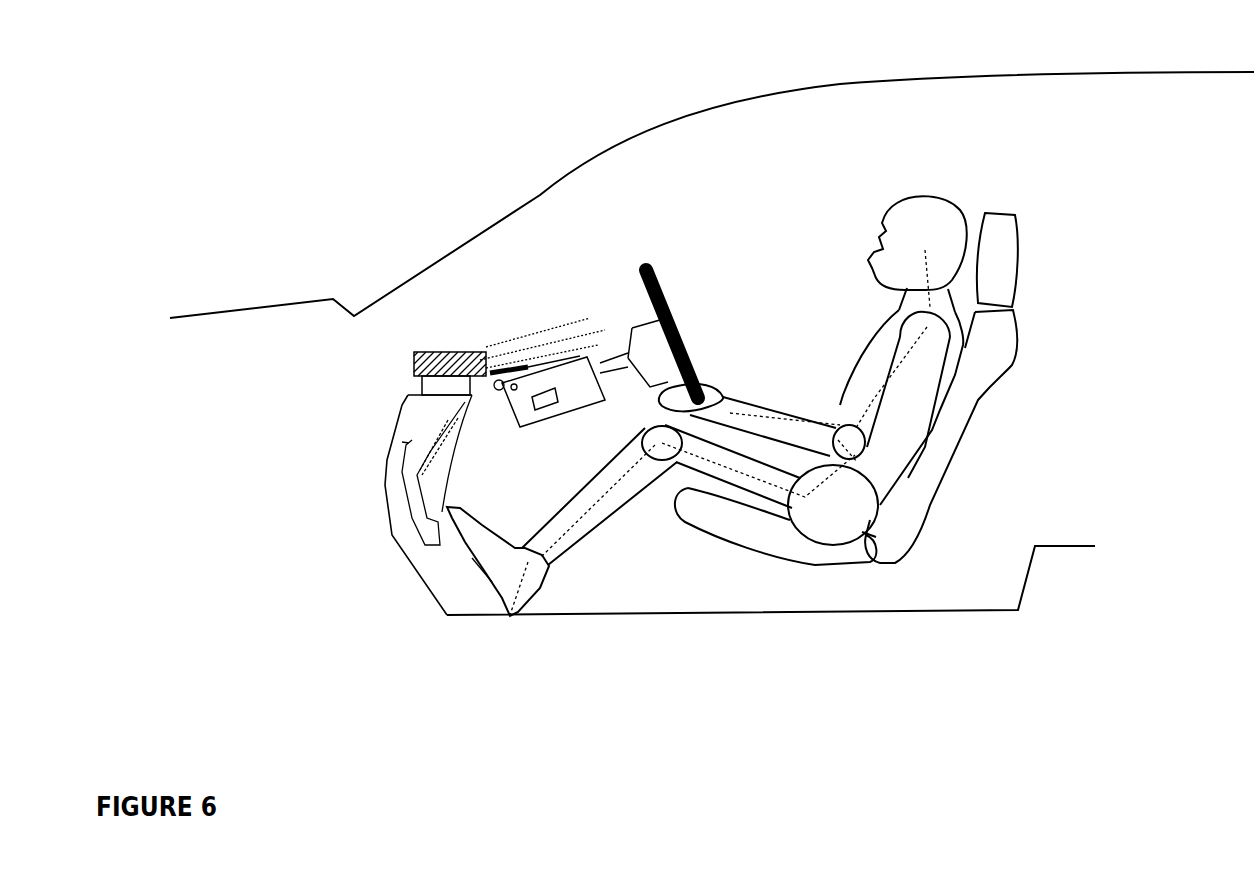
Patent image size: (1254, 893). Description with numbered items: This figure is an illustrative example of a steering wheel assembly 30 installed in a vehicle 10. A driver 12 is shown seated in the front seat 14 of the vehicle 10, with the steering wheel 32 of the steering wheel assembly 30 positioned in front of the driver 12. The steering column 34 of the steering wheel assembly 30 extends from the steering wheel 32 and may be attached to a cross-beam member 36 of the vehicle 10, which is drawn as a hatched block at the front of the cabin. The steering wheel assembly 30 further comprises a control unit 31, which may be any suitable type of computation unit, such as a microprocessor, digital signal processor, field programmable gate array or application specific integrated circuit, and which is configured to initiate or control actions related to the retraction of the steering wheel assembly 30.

The vehicle 10 is at (462, 92).
The driver 12 is at (917, 193).
The front seat 14 is at (1000, 213).
The steering wheel assembly 30 is at (576, 266).
The control unit 31 is at (535, 410).
The steering wheel 32 is at (660, 277).
The steering column 34 is at (600, 403).
The cross-beam member 36 is at (462, 372).